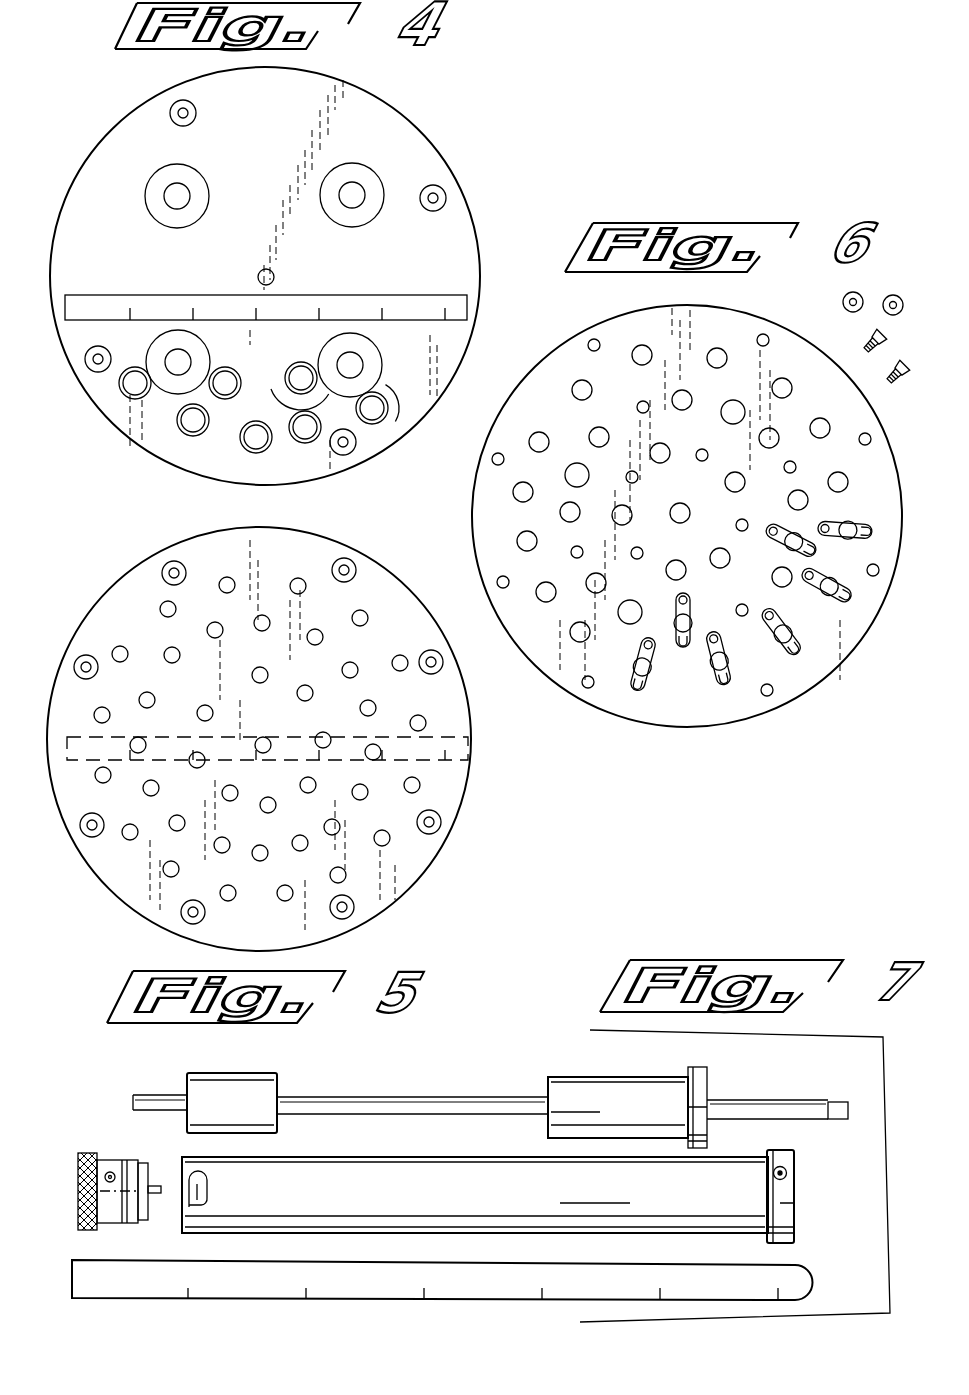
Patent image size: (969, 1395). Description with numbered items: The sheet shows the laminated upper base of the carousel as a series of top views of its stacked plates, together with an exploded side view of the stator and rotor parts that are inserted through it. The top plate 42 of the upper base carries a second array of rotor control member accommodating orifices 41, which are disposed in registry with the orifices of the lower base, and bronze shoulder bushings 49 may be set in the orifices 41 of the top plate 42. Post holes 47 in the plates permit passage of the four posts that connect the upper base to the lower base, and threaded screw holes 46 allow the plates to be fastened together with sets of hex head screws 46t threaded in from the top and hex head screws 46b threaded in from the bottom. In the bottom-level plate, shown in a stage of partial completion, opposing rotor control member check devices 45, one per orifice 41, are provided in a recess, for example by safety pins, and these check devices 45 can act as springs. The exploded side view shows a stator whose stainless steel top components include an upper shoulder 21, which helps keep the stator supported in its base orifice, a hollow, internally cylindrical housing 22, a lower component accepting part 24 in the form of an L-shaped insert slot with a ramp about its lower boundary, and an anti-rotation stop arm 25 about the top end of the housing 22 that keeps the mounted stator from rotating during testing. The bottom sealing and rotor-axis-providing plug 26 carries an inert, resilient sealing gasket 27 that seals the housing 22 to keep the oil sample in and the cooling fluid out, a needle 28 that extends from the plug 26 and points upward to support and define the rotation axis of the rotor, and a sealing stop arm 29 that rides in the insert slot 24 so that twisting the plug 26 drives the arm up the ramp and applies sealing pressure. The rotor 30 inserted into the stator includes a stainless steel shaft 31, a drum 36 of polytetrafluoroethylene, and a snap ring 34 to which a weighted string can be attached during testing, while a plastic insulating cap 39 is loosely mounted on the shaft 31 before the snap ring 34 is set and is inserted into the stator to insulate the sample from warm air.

In FIG. 7, the upper shoulder 21 is at (768, 1240).
In FIG. 7, the housing 22 is at (510, 1157).
In FIG. 7, the lower component accepting part 24 is at (207, 1184).
In FIG. 7, the anti-rotation stop arm 25 is at (787, 1171).
In FIG. 7, the plug 26 is at (110, 1228).
In FIG. 7, the sealing gasket 27 is at (148, 1218).
In FIG. 7, the needle 28 is at (157, 1185).
In FIG. 7, the sealing stop arm 29 is at (110, 1170).
In FIG. 7, the rotor 30 is at (382, 1097).
In FIG. 7, the shaft 31 is at (380, 1115).
In FIG. 7, the snap ring 34 is at (828, 1102).
In FIG. 7, the drum 36 is at (280, 1082).
In FIG. 7, the insulating cap 39 is at (572, 1077).
In FIG. 4, the rotor control member accommodating orifices 41 is at (247, 443).
In FIG. 5, the rotor control member accommodating orifices 41 is at (140, 612).
In FIG. 6, the rotor control member accommodating orifices 41 is at (715, 640).
In FIG. 4, the top plate 42 is at (350, 278).
In FIG. 5, the top plate 42 is at (267, 748).
In FIG. 6, the rotor control member check devices 45 is at (635, 670).
In FIG. 5, the threaded screw holes 46 is at (86, 655).
In FIG. 6, the threaded screw holes 46 is at (592, 340).
In FIG. 5, the bottom hex head screws 46b is at (174, 560).
In FIG. 6, the bottom hex head screws 46b is at (888, 378).
In FIG. 4, the top hex head screws 46t is at (180, 112).
In FIG. 4, the post holes 47 is at (348, 190).
In FIG. 5, the post holes 47 is at (362, 742).
In FIG. 6, the post holes 47 is at (733, 424).
In FIG. 4, the bronze shoulder bushings 49 is at (393, 400).